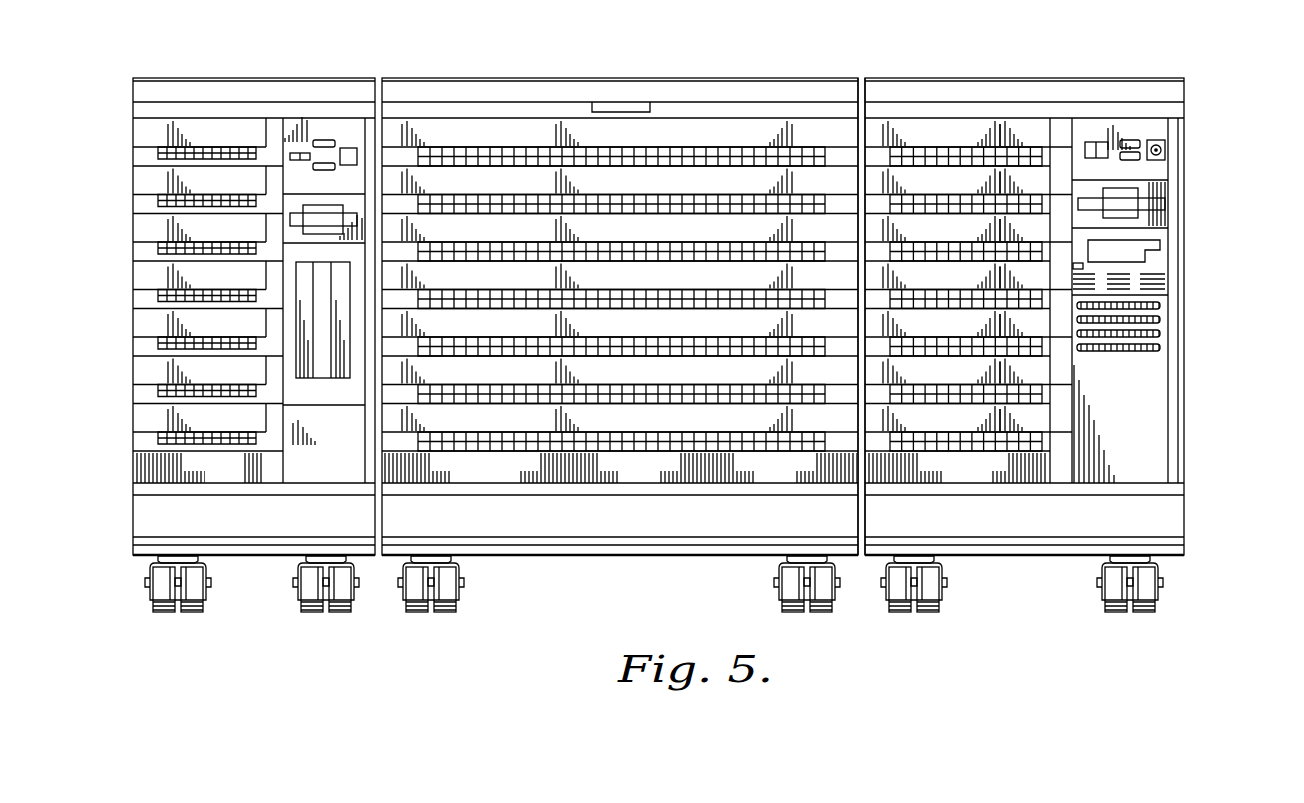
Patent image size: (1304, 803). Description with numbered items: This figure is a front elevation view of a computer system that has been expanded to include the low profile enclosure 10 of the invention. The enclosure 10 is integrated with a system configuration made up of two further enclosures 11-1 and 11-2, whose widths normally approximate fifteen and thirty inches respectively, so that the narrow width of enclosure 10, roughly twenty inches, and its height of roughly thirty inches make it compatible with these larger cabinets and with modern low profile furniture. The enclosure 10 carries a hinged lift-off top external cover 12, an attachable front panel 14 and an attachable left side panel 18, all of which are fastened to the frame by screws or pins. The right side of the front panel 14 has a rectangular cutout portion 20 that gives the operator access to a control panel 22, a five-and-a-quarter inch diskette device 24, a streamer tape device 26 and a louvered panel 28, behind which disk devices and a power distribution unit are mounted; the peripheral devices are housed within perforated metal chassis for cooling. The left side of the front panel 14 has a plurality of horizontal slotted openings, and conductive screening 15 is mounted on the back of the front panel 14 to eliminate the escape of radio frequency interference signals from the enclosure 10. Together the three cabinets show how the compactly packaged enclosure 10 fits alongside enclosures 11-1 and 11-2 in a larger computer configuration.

The enclosure 10 is at (713, 320).
The enclosure 11-1 is at (210, 77).
The enclosure 11-2 is at (572, 77).
The hinged lift-off top external cover 12 is at (1061, 322).
The front panel 14 is at (1163, 528).
The conductive screening 15 is at (970, 450).
The left side panel 18 is at (860, 97).
The rectangular cutout portion 20 is at (1156, 304).
The control panel 22 is at (1158, 172).
The 5¼ inch diskette device 24 is at (1160, 220).
The streamer tape device 26 is at (1157, 265).
The louvered panel 28 is at (1143, 404).